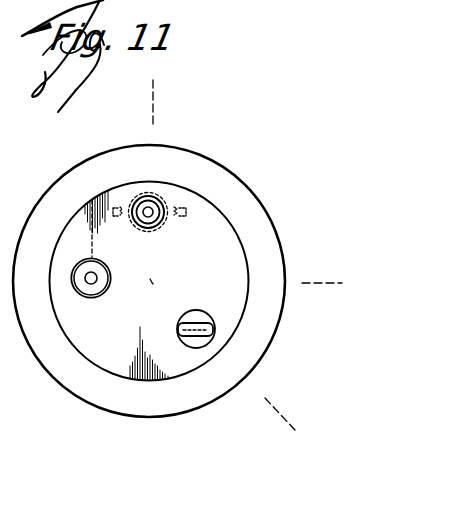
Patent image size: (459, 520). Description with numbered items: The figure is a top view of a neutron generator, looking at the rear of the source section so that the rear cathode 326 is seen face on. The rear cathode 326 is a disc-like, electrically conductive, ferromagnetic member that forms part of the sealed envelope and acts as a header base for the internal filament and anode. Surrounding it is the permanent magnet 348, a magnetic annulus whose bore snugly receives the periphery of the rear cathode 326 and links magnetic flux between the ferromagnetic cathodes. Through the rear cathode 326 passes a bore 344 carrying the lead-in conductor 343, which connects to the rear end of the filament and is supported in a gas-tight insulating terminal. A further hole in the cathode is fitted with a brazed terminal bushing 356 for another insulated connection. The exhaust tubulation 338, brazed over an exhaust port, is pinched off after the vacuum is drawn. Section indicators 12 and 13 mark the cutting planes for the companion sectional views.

The rear cathode 326 is at (233, 267).
The exhaust tubulation 338 is at (197, 310).
The lead-in conductor 343 is at (148, 212).
The bore 344 is at (158, 226).
The permanent magnet 348 is at (175, 407).
The terminal bushing 356 is at (110, 275).
The section line 12- 12 is at (158, 100).
The section line 13- 13 is at (320, 288).